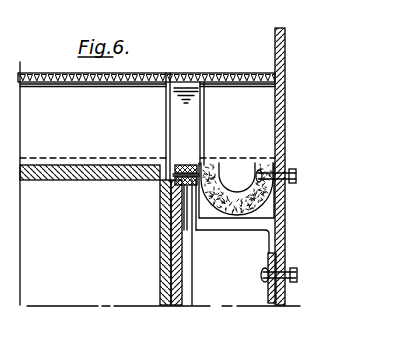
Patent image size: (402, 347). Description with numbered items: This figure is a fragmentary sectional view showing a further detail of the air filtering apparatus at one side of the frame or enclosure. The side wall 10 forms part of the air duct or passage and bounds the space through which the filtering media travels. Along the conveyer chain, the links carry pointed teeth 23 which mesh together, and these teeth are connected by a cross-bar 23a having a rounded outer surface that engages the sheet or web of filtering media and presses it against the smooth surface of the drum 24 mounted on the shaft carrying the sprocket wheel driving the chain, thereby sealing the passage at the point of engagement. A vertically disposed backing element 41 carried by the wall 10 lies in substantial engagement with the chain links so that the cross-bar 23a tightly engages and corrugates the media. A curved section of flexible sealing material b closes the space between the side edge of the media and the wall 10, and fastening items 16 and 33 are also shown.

The side wall 10 is at (275, 63).
The spacer strip 16 is at (172, 74).
The pointed tooth 23 is at (174, 143).
The cross-bar 23a is at (147, 183).
The drum 24 is at (110, 181).
The nut 33 is at (278, 170).
The backing element 41 is at (252, 220).
The flexible sealing material b is at (233, 217).